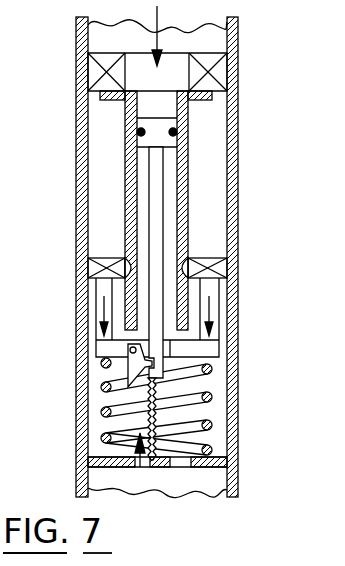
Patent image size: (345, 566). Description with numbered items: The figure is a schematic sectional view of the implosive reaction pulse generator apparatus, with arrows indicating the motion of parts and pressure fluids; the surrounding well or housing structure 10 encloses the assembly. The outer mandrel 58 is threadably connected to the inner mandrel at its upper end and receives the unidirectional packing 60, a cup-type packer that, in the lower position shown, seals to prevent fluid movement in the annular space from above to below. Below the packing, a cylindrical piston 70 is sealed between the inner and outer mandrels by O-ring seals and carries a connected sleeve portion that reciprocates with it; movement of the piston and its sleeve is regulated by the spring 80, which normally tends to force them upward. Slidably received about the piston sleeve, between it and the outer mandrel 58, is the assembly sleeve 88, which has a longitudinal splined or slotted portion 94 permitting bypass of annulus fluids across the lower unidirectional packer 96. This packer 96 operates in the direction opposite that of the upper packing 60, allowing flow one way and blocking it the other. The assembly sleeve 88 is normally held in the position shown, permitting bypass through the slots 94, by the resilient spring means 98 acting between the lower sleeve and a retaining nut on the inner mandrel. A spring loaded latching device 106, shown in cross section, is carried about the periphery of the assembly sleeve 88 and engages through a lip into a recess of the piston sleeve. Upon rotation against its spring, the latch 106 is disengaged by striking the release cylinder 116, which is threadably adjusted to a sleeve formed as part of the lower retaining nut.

The housing 10 is at (83, 132).
The outer mandrel 58 is at (187, 201).
The unidirectional packing 60 is at (220, 70).
The cylindrical piston 70 is at (172, 128).
The spring 80 is at (138, 419).
The assembly sleeve 88 is at (210, 348).
The splined or slotted portion 94 is at (130, 258).
The unidirectional packer 96 is at (215, 268).
The resilient spring means 98 is at (212, 397).
The spring loaded latching device 106 is at (143, 362).
The release cylinder 116 is at (96, 452).